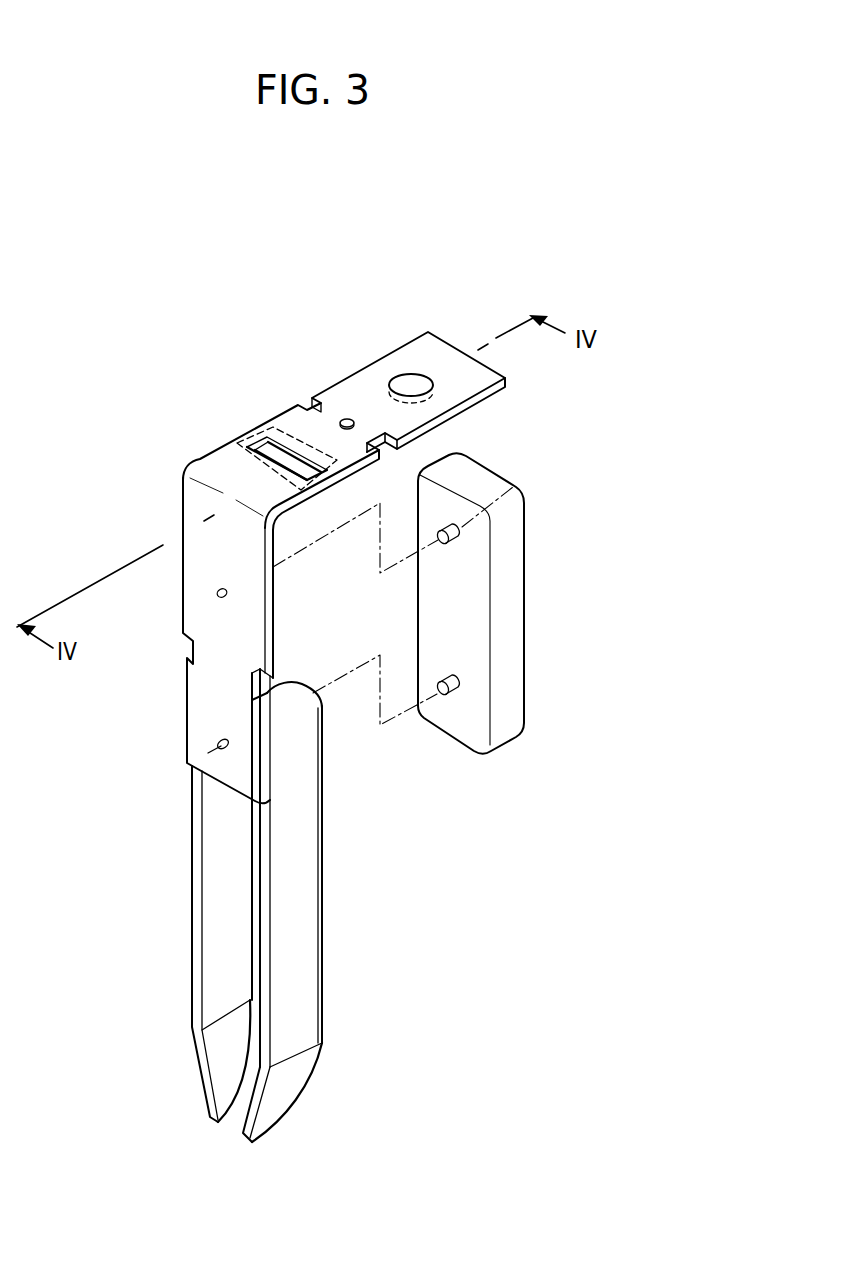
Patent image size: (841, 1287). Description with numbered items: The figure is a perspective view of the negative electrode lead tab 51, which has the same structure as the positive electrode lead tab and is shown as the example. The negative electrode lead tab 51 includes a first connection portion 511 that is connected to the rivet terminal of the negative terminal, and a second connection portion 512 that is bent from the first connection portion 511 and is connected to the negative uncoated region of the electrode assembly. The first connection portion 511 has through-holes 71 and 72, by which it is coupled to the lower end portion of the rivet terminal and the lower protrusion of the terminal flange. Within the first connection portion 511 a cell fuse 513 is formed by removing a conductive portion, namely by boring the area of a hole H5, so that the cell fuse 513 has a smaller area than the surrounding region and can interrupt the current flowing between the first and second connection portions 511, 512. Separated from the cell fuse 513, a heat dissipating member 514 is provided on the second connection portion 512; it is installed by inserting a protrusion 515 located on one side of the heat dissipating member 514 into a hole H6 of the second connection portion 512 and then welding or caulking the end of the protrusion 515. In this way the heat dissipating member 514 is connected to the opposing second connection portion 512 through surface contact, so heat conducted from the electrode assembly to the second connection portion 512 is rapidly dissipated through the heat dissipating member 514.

The negative electrode lead tab 51 is at (318, 214).
The first connection portion 511 is at (325, 504).
The second connection portion 512 is at (195, 810).
The cell fuse 513 is at (250, 440).
The heat dissipating member 514 is at (523, 603).
The protrusion 515 is at (457, 537).
The through-hole 71 is at (398, 376).
The through-hole 72 is at (345, 418).
The hole H5 is at (272, 460).
The hole H6 is at (218, 594).